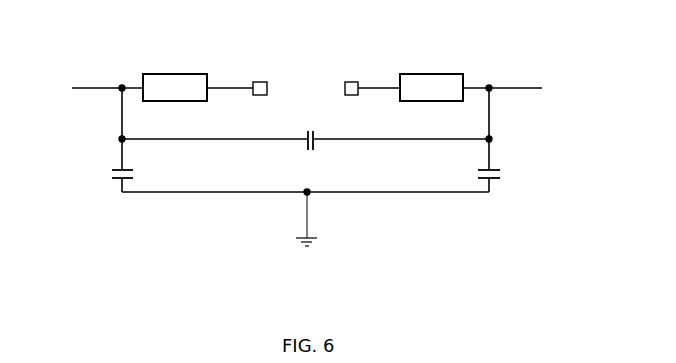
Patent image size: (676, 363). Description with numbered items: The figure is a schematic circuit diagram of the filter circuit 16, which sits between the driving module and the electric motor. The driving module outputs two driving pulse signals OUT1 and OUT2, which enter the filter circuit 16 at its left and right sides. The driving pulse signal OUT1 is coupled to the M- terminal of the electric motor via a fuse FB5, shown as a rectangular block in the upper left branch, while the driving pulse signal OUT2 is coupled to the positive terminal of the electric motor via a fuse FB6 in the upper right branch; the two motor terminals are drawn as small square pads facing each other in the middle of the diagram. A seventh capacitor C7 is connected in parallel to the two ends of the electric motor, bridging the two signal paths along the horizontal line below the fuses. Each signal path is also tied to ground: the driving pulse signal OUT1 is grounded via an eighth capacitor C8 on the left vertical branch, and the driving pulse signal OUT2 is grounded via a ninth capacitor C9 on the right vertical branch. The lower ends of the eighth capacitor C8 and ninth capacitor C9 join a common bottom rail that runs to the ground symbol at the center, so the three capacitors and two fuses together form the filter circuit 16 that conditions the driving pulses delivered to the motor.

The filter circuit 16 is at (318, 44).
The seventh capacitor C7 is at (325, 148).
The eighth capacitor C8 is at (136, 161).
The ninth capacitor C9 is at (500, 161).
The fuse FB5 is at (175, 87).
The fuse FB6 is at (431, 87).
The driving pulse signal OUT1 is at (105, 76).
The driving pulse signal OUT2 is at (506, 76).
The M− terminal M- is at (256, 103).